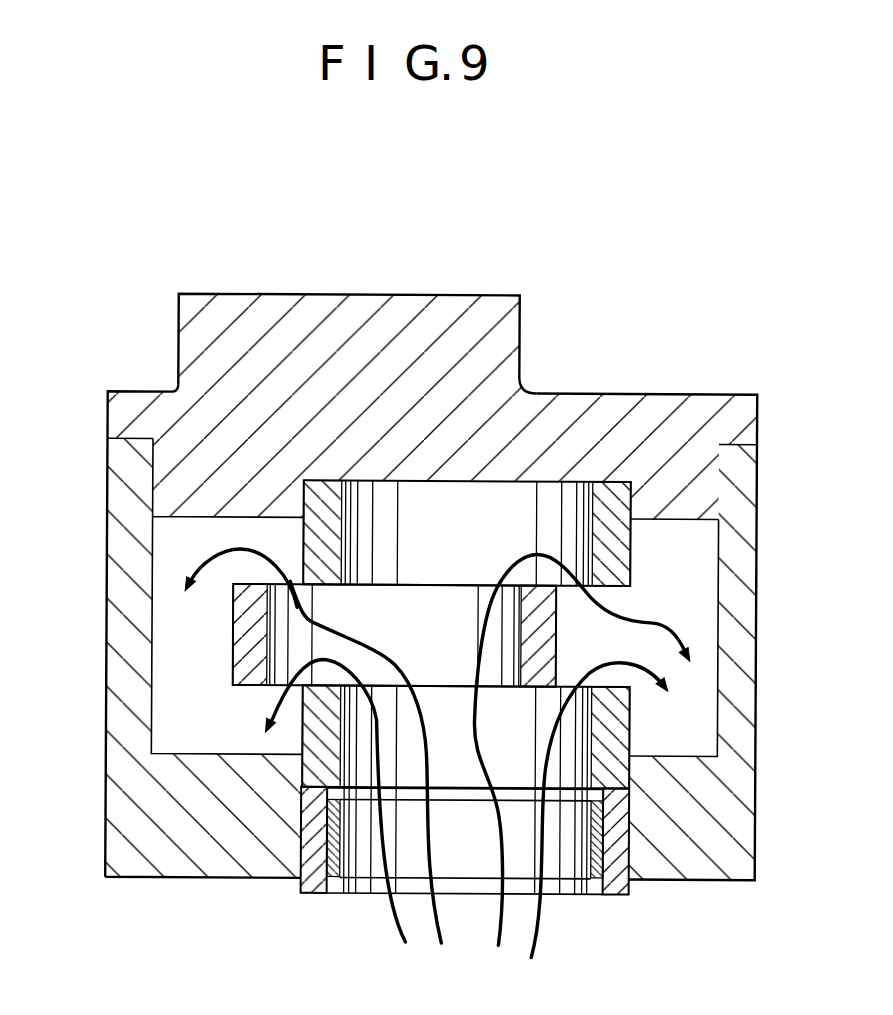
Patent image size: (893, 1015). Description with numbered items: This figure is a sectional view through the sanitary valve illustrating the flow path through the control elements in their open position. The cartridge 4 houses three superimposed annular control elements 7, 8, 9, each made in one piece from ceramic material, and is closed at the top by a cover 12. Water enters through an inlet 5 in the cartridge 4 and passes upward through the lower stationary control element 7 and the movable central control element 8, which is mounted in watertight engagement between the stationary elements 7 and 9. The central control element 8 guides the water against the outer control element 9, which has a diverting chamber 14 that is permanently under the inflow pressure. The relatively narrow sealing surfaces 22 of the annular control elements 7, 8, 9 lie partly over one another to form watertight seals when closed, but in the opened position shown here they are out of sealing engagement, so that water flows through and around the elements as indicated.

The cartridge 4 is at (115, 833).
The cover 12 is at (405, 312).
The diverting chamber 14 is at (557, 507).
The outer control element 9 is at (467, 464).
The central control element 8 is at (440, 631).
The control element 7 is at (462, 751).
The inlet 5 is at (470, 857).
The sealing surfaces 22 is at (622, 590).